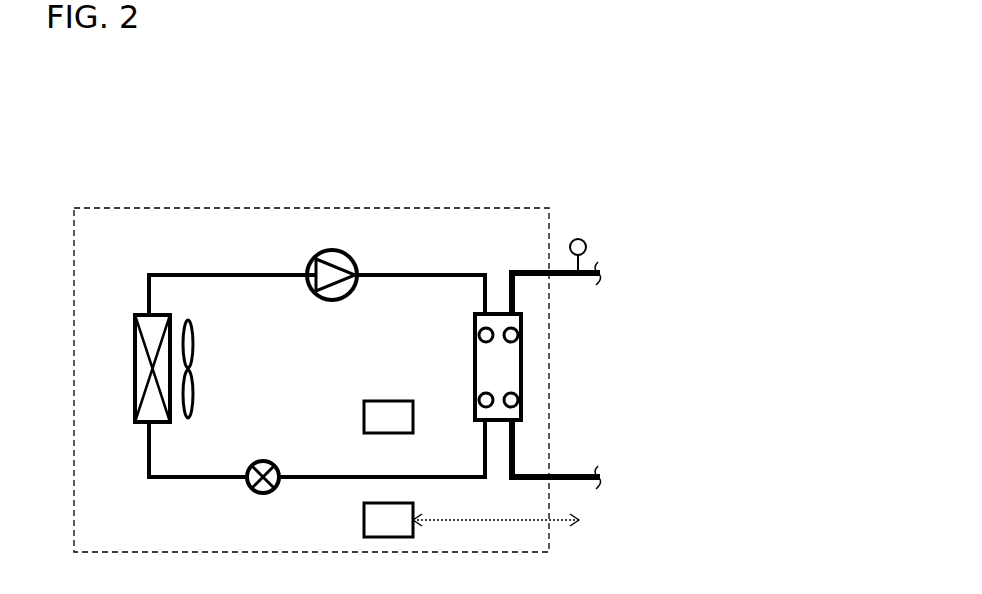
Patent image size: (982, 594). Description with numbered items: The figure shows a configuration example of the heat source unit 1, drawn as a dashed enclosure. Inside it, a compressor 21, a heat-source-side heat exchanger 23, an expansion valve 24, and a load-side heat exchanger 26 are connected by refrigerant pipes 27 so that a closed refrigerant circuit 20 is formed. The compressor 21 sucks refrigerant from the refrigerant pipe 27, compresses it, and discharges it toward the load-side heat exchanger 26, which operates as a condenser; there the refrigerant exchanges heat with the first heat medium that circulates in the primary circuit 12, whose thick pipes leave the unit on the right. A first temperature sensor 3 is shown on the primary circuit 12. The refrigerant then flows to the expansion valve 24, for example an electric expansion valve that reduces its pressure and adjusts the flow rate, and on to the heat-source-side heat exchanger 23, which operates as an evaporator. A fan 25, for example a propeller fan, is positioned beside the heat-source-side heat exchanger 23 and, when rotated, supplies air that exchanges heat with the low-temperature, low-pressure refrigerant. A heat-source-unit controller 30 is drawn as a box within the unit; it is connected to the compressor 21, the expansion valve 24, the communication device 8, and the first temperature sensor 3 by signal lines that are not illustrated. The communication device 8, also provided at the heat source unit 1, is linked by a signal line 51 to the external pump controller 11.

The heat source unit 1 is at (221, 208).
The first temperature sensor 3 is at (584, 243).
The communication device 8 is at (364, 525).
The pump controller 11 is at (650, 522).
The primary circuit 12 is at (558, 476).
The refrigerant circuit 20 is at (425, 276).
The compressor 21 is at (349, 259).
The heat-source-side heat exchanger 23 is at (135, 338).
The expansion valve 24 is at (256, 494).
The fan 25 is at (194, 340).
The load-side heat exchanger 26 is at (473, 352).
The refrigerant pipes 27 is at (208, 275).
The heat-source-unit controller 30 is at (364, 416).
The signal lines 51 is at (455, 519).